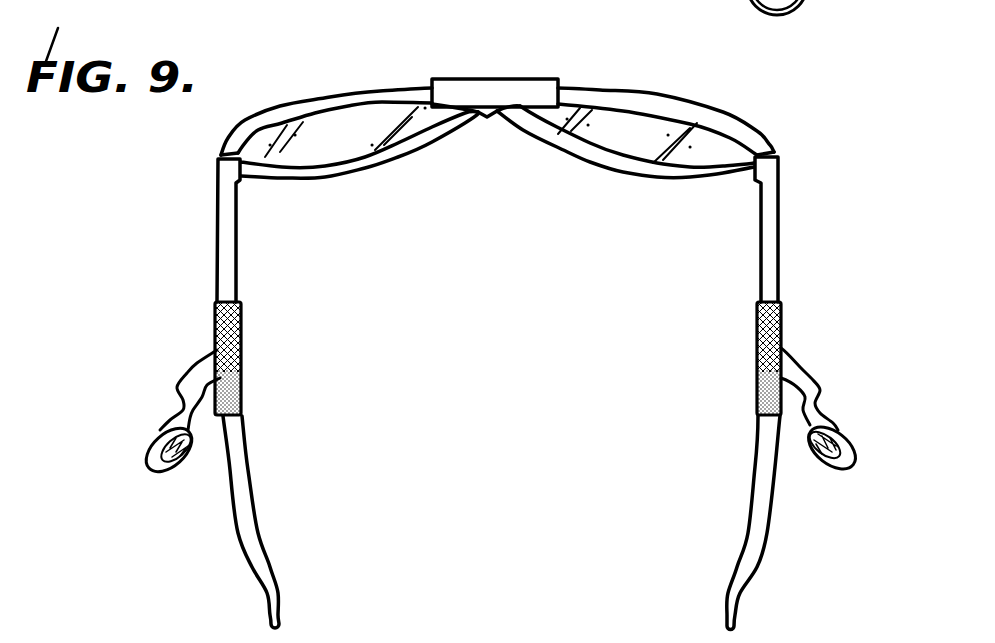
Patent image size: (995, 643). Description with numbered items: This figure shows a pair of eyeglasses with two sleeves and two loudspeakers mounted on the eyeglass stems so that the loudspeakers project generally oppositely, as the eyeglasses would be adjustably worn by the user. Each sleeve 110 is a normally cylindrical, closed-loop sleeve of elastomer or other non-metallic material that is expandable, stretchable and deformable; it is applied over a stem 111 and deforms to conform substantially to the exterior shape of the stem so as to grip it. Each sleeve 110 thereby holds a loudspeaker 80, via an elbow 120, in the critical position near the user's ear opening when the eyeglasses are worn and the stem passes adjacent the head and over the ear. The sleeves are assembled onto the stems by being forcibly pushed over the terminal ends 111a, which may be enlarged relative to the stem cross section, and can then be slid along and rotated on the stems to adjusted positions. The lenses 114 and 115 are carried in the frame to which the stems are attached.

The loudspeaker 80 is at (163, 450).
The sleeve 110 is at (230, 337).
The stem 111 is at (219, 258).
The terminal end 111a is at (270, 621).
The lens 114 is at (338, 143).
The lens 115 is at (613, 137).
The elbow 120 is at (203, 363).